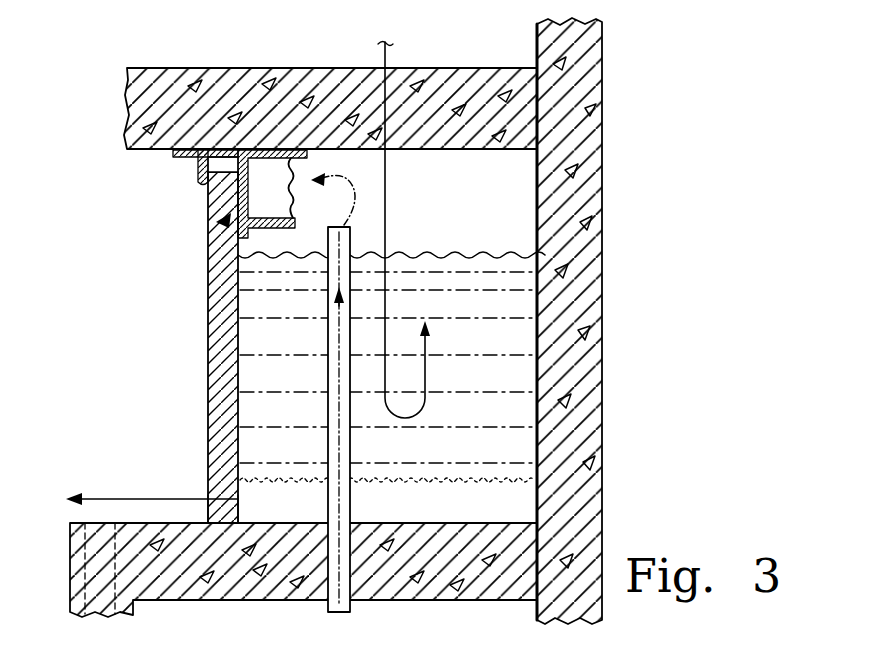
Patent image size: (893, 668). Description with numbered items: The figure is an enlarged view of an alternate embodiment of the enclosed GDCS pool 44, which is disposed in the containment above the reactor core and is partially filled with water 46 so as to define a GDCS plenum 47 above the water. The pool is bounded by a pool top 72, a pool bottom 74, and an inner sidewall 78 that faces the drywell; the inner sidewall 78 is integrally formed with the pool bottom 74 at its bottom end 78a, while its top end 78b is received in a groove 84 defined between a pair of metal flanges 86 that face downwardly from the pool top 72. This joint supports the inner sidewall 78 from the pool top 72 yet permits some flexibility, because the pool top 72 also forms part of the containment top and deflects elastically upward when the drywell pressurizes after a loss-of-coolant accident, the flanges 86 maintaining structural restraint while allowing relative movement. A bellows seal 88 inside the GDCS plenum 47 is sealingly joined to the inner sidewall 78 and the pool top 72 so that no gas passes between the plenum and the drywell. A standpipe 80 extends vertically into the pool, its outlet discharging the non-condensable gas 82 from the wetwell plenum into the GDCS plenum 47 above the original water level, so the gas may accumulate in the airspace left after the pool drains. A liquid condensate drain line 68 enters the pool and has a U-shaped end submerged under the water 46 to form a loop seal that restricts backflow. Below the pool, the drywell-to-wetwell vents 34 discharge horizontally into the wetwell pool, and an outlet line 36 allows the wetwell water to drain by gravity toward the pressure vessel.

The drywell-to-wetwell vents 34 is at (80, 563).
The outlet line 36 is at (113, 498).
The GDCS pool 44 is at (536, 388).
The GDCS pool water 46 is at (441, 255).
The GDCS plenum 47 is at (498, 190).
The liquid condensate drain line 68 is at (388, 50).
The pool top 72 is at (342, 148).
The pool bottom 74 is at (420, 524).
The inner sidewall 78 is at (205, 333).
The bottom end of inner sidewall 78a is at (208, 500).
The top end of inner sidewall 78b is at (208, 198).
The standpipe 80 is at (327, 372).
The non-condensable gas 82 is at (386, 190).
The groove 84 is at (224, 160).
The metal flanges 86 is at (201, 176).
The bellows seal 88 is at (295, 222).